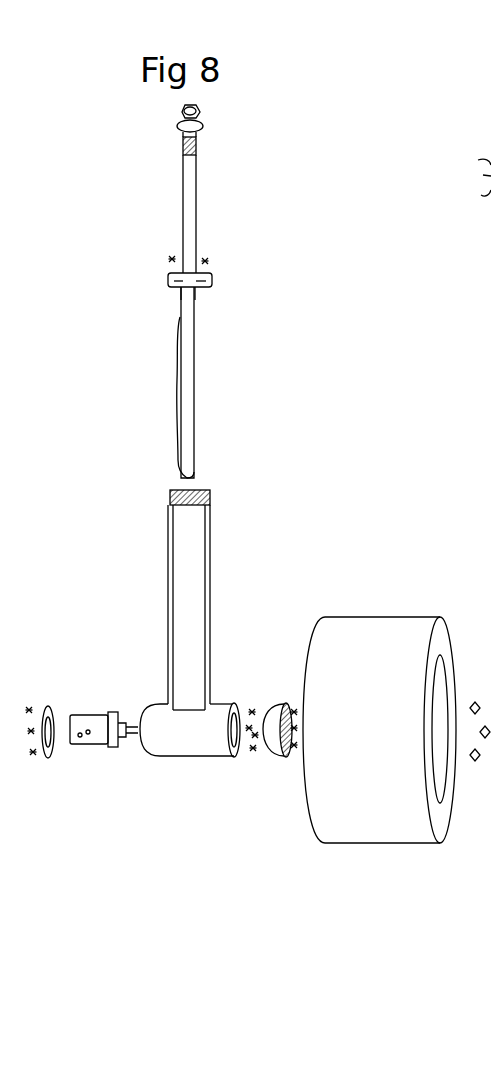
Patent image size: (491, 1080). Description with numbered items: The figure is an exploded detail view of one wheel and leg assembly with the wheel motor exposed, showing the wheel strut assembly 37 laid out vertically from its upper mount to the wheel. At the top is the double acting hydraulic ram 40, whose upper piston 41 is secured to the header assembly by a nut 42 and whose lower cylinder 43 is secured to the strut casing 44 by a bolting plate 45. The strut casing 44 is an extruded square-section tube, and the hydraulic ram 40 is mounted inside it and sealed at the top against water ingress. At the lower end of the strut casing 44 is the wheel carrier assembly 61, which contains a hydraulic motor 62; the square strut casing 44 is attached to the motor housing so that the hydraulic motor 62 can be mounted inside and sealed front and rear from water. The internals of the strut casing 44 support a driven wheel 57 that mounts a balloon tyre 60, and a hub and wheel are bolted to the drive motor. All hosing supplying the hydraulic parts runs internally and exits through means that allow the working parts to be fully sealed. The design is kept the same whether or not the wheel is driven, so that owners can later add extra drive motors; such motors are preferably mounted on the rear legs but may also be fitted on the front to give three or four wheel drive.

The wheel strut assembly 37 is at (277, 474).
The double acting hydraulic ram 40 is at (272, 287).
The upper piston 41 is at (228, 197).
The nut 42 is at (232, 110).
The lower cylinder 43 is at (235, 386).
The strut casing 44 is at (242, 570).
The bolting plate 45 is at (262, 249).
The driven wheel 57 is at (270, 822).
The balloon tyre 60 is at (384, 888).
The wheel carrier assembly 61 is at (180, 770).
The hydraulic motor 62 is at (82, 787).